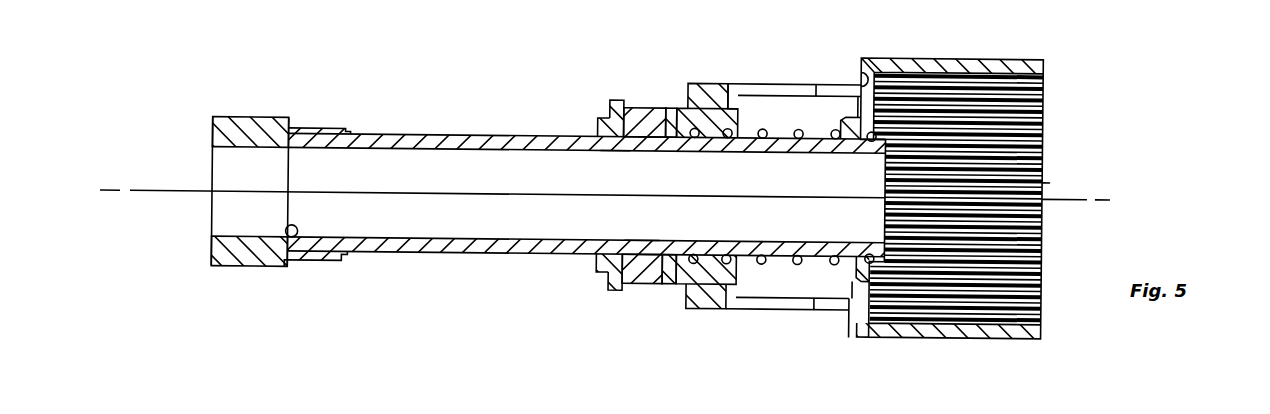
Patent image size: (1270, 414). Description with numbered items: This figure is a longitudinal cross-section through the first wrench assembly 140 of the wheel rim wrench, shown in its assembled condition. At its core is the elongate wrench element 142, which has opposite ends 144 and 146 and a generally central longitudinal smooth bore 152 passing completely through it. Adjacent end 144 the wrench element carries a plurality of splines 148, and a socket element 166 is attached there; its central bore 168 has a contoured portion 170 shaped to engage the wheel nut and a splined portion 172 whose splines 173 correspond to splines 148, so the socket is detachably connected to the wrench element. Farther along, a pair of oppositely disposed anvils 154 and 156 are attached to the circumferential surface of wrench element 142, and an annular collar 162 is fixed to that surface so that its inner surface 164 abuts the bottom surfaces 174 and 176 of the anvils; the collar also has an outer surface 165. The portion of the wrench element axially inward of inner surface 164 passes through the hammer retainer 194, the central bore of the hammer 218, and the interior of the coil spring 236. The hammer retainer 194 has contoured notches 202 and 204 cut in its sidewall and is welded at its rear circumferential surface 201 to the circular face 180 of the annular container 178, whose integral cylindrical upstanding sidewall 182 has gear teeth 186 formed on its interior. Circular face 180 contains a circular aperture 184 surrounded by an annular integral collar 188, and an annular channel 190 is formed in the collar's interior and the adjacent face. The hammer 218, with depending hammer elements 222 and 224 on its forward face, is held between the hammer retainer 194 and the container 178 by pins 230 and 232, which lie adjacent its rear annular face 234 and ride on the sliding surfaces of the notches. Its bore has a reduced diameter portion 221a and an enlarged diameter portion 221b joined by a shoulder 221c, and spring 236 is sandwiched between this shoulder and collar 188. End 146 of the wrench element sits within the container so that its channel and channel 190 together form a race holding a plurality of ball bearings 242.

The first wrench assembly 140 is at (512, 262).
The elongate wrench element 142 is at (428, 249).
The end 144 is at (287, 234).
The end 146 is at (1042, 144).
The splines 148 is at (302, 256).
The central longitudinal smooth bore 152 is at (405, 150).
The anvil 154 is at (640, 103).
The anvil 156 is at (637, 265).
The annular collar 162 is at (598, 120).
The inner surface 164 is at (625, 140).
The outer surface 165 is at (597, 270).
The socket element 166 is at (243, 256).
The central bore 168 is at (228, 167).
The contoured portion 170 is at (227, 234).
The splined portion 172 is at (300, 127).
The splines 173 is at (327, 258).
The bottom surface 174 is at (612, 95).
The bottom surface 176 is at (612, 286).
The container 178 is at (952, 330).
The circular face 180 is at (862, 51).
The cylindrical upstanding sidewall 182 is at (952, 50).
The circular aperture 184 is at (851, 305).
The gear teeth 186 is at (1045, 95).
The annular integral collar 188 is at (852, 110).
The annular channel 190 is at (866, 270).
The hammer retainer 194 is at (700, 304).
The rear circumferential surface 201 is at (858, 66).
The contoured notch 202 is at (772, 83).
The contoured notch 204 is at (802, 305).
The hammer 218 is at (680, 279).
The reduced diameter portion 221a is at (685, 130).
The enlarged diameter portion 221b is at (704, 247).
The shoulder 221c is at (697, 79).
The hammer element 222 is at (667, 122).
The hammer element 224 is at (658, 240).
The pin 230 is at (712, 79).
The pin 232 is at (736, 305).
The rear annular face 234 is at (750, 258).
The coil spring 236 is at (812, 123).
The ball bearings 242 is at (871, 246).